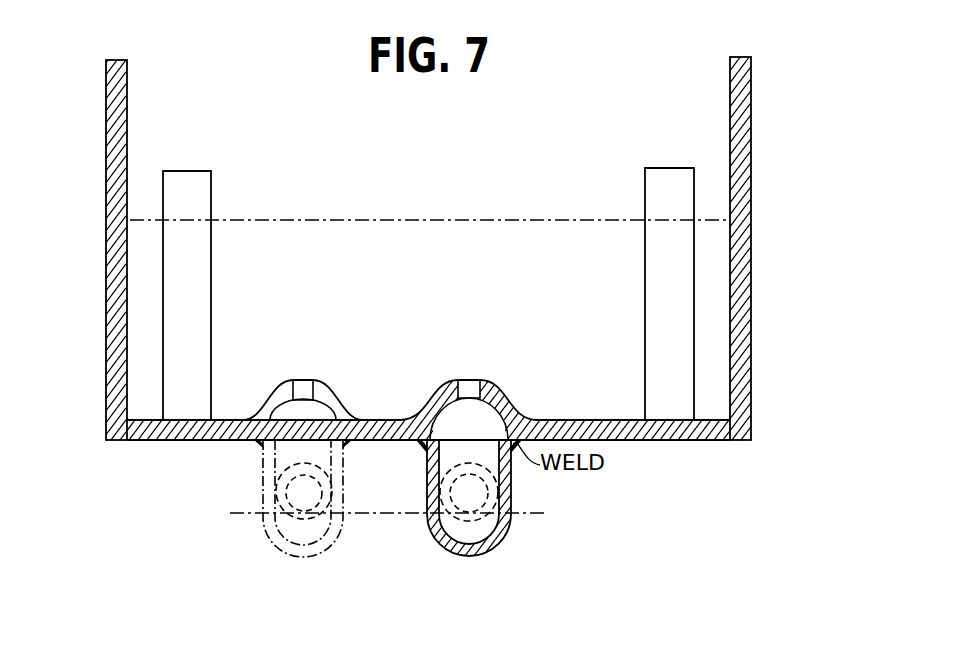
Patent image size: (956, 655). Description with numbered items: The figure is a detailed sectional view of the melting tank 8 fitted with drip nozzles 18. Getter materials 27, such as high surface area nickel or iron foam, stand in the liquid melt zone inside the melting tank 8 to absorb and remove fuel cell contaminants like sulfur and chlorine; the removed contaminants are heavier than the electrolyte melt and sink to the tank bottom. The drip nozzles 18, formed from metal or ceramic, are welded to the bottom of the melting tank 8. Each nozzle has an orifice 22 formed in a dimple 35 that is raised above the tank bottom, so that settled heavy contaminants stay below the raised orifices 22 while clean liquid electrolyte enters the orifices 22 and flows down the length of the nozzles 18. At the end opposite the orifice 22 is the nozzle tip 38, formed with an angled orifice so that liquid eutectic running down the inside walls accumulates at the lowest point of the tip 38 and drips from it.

The melting tank 8 is at (180, 137).
The getter materials 27 is at (180, 293).
The orifices 22 is at (306, 392).
The dimples 35 is at (507, 381).
The drip nozzles 18 is at (257, 471).
The nozzle tip 38 is at (426, 524).